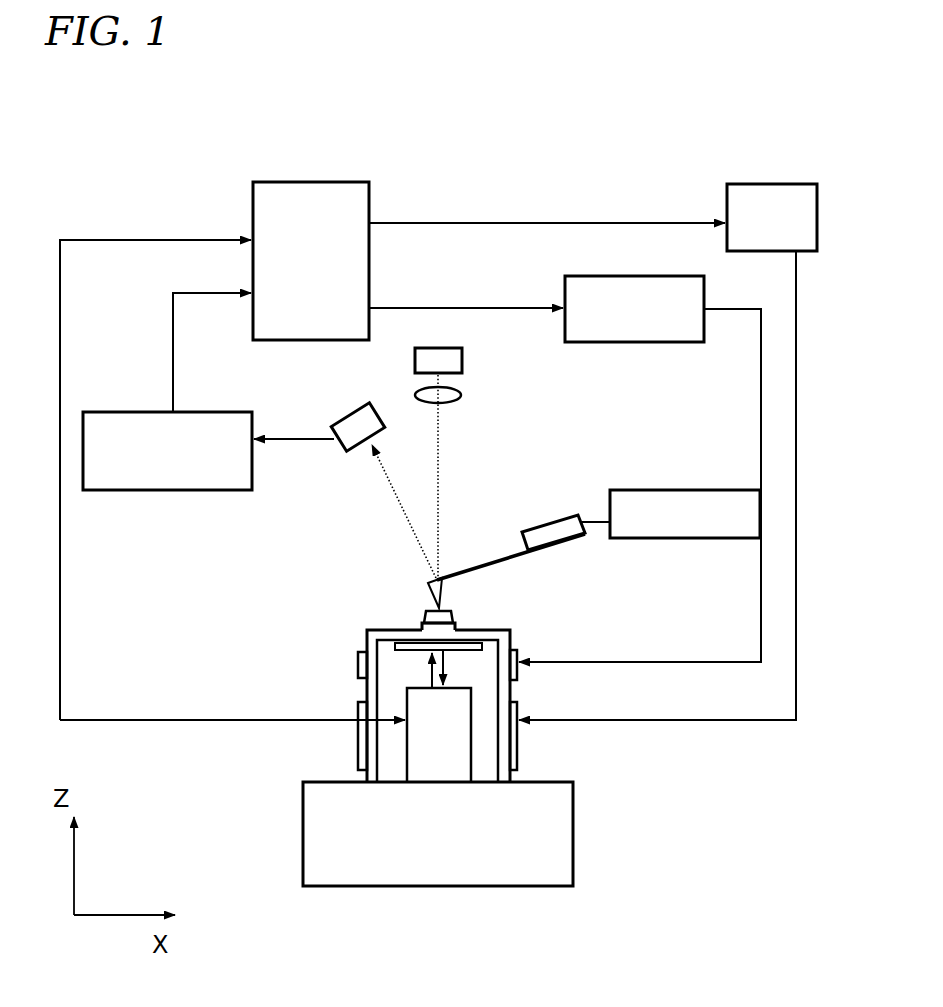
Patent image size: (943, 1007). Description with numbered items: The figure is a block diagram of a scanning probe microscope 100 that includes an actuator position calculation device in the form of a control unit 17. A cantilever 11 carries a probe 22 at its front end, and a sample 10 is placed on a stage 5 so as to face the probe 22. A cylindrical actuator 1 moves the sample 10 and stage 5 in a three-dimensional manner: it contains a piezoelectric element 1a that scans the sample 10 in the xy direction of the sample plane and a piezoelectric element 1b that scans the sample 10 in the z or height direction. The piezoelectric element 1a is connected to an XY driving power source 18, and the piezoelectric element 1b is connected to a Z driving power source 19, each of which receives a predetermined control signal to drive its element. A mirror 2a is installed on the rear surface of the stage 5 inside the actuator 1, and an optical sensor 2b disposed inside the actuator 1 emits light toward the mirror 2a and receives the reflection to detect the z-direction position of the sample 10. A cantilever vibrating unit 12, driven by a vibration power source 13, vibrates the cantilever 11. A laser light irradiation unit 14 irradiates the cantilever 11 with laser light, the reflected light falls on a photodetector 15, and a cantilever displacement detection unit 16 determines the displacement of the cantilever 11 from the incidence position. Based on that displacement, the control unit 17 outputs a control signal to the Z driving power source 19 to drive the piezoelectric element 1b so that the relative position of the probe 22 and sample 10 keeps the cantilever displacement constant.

The scanning probe microscope 100 is at (530, 128).
The actuator 1 is at (636, 752).
The piezoelectric element 1a is at (517, 745).
The piezoelectric element 1b is at (517, 673).
The mirror 2a is at (403, 658).
The optical sensor 2b is at (422, 767).
The stage 5 is at (455, 624).
The sample 10 is at (425, 614).
The cantilever 11 is at (475, 571).
The probe 22 is at (443, 593).
The cantilever vibrating unit 12 is at (532, 527).
The vibration power source 13 is at (625, 488).
The laser light irradiation unit 14 is at (463, 358).
The photodetector 15 is at (343, 413).
The cantilever displacement detection unit 16 is at (125, 410).
The control unit 17 is at (251, 190).
The XY driving power source 18 is at (752, 182).
The Z driving power source 19 is at (568, 275).